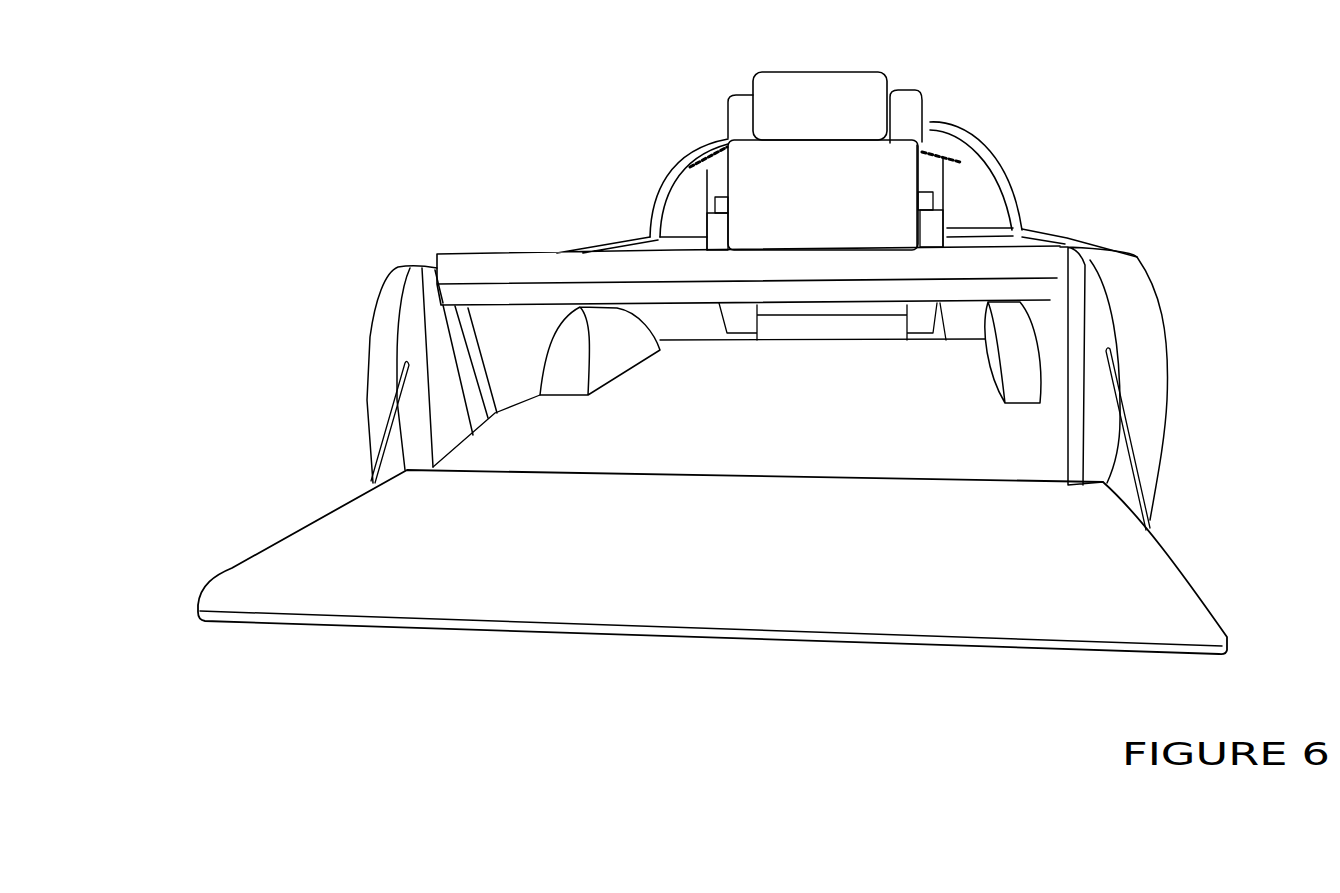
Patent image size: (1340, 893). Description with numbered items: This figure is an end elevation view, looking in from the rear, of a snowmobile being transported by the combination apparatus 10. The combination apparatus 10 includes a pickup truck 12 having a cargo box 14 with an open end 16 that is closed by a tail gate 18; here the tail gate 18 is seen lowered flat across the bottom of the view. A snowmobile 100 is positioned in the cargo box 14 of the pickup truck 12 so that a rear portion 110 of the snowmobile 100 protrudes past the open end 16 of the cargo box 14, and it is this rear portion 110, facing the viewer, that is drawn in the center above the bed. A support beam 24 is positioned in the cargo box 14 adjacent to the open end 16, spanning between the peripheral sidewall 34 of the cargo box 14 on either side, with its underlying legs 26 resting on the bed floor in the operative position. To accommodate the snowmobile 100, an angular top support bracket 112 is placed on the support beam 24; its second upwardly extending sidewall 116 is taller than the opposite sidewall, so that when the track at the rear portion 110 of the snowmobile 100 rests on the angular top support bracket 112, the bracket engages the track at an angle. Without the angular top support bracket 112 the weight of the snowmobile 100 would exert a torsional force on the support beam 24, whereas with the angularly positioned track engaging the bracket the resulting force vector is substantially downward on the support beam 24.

The combination apparatus 10 is at (236, 316).
The pickup truck 12 is at (1168, 373).
The cargo box 14 is at (790, 412).
The open end 16 is at (424, 419).
The tail gate 18 is at (750, 600).
The support beam 24 is at (1040, 290).
The underlying legs 26 is at (465, 410).
The peripheral sidewall 34 is at (440, 293).
The snowmobile 100 is at (922, 103).
The rear portion 110 is at (762, 170).
The angular top support bracket 112 is at (853, 267).
The second upwardly extending sidewall 116 is at (1043, 303).